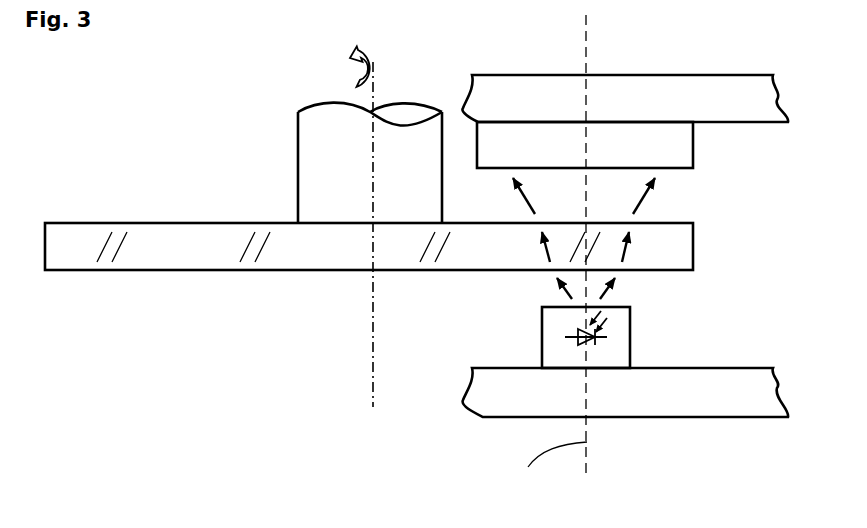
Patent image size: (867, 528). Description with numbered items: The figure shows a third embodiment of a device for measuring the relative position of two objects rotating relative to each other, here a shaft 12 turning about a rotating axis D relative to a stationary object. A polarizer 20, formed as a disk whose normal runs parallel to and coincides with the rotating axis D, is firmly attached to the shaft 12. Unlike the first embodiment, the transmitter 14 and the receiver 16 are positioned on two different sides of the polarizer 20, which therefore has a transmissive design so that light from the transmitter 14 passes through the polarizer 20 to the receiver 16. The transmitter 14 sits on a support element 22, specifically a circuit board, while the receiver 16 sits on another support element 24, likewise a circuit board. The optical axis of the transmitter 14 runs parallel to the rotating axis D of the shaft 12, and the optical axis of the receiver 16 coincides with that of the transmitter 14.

The shaft 12 is at (303, 147).
The transmitter 14 is at (620, 332).
The receiver 16 is at (670, 150).
The polarizer 20 is at (680, 241).
The support element 22 is at (723, 392).
The support element 24 is at (743, 90).
The rotating axis D is at (376, 337).